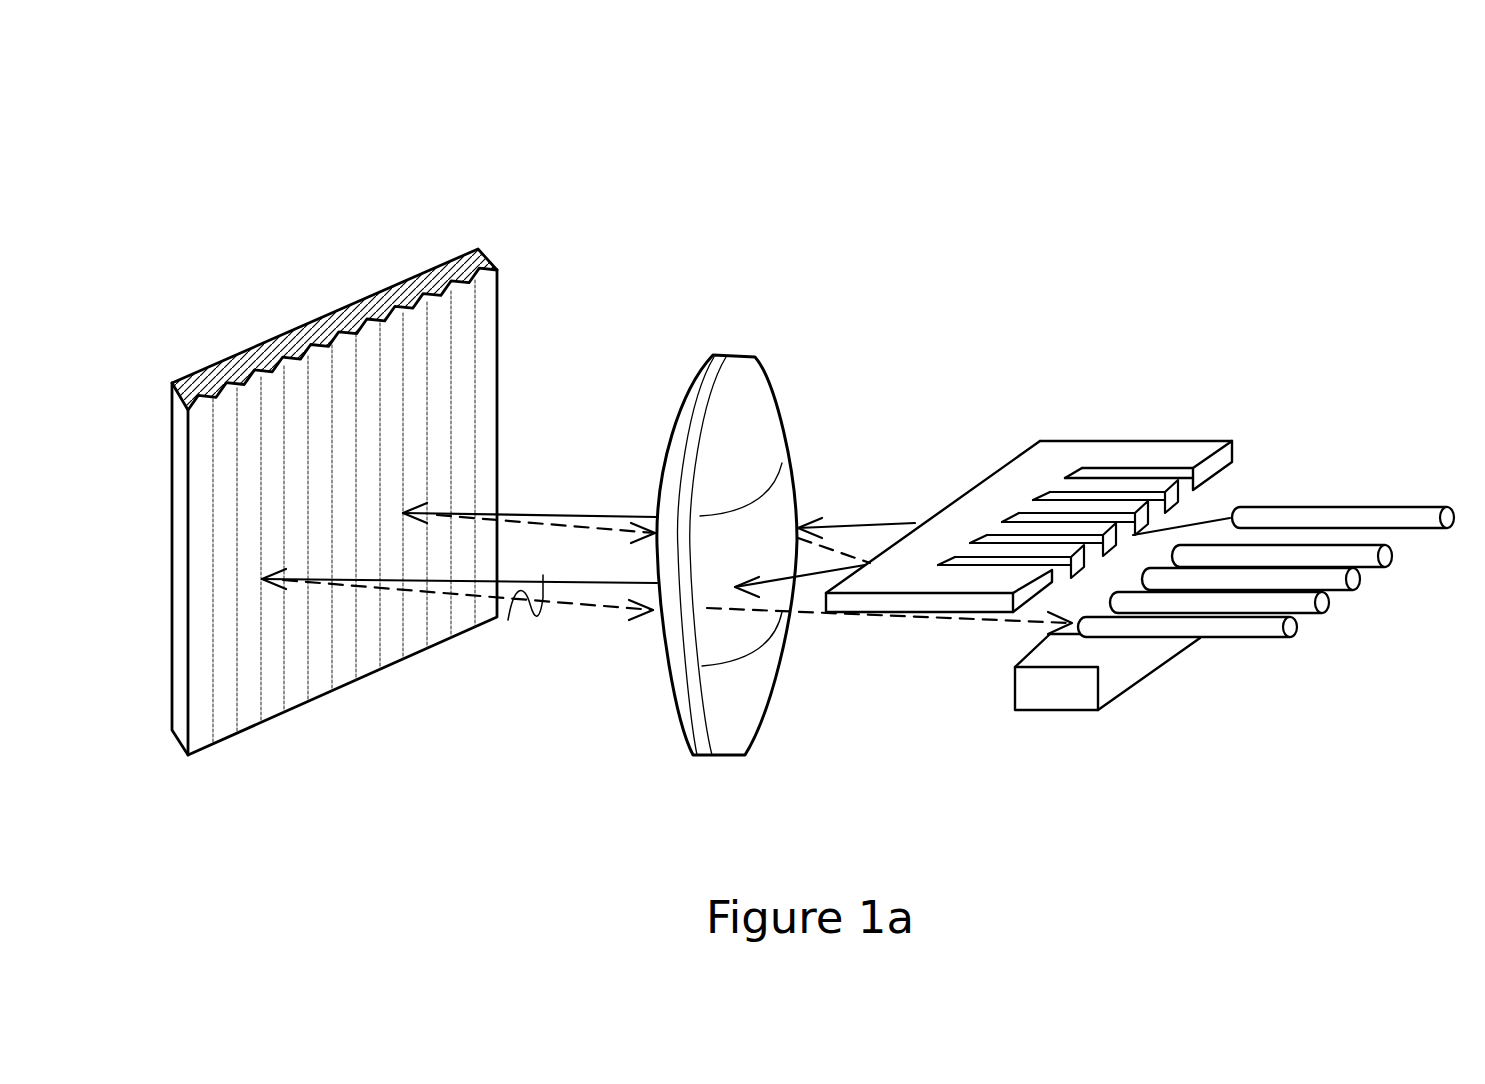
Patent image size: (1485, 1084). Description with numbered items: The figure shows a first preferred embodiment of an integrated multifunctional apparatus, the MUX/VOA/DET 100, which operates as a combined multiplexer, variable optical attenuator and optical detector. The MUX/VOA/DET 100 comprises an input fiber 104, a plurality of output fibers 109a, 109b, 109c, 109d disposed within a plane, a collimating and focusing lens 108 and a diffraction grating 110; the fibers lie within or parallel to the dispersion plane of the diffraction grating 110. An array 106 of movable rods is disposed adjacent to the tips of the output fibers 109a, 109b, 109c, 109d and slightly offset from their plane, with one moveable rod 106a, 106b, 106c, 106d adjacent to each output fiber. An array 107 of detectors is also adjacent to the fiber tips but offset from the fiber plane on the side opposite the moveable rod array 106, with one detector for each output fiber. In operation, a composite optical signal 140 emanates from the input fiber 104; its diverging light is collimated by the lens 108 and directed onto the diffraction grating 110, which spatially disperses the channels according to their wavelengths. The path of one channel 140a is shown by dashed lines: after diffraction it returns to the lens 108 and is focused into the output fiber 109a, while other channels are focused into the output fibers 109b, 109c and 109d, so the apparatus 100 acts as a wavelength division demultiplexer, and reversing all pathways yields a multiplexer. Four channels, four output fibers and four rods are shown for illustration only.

The MUX/VOA/DET 100 is at (699, 147).
The input fiber 104 is at (1438, 505).
The array of movable rods 106 is at (1180, 440).
The moveable rod 106a is at (1067, 548).
The moveable rod 106b is at (1100, 527).
The moveable rod 106c is at (1135, 508).
The moveable rod 106d is at (1165, 488).
The array of detectors 107 is at (1098, 710).
The collimating and focusing lens 108 is at (713, 353).
The output fiber 109a is at (1285, 640).
The output fiber 109b is at (1317, 613).
The output fiber 109c is at (1358, 593).
The output fiber 109d is at (1392, 567).
The diffraction grating 110 is at (367, 298).
The composite optical signal 140 is at (558, 508).
The channel 140a is at (620, 531).